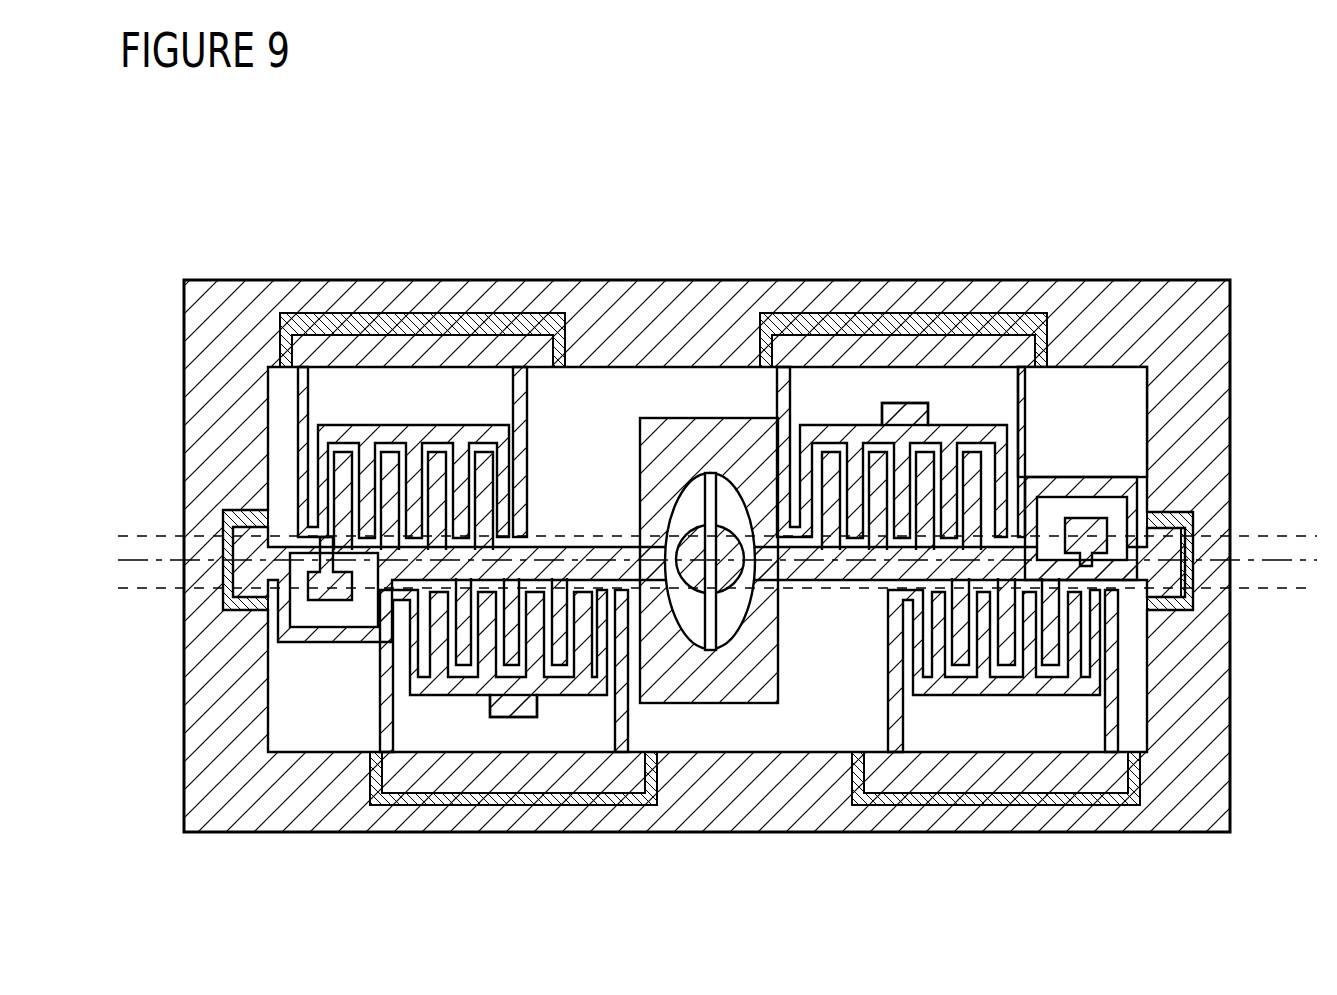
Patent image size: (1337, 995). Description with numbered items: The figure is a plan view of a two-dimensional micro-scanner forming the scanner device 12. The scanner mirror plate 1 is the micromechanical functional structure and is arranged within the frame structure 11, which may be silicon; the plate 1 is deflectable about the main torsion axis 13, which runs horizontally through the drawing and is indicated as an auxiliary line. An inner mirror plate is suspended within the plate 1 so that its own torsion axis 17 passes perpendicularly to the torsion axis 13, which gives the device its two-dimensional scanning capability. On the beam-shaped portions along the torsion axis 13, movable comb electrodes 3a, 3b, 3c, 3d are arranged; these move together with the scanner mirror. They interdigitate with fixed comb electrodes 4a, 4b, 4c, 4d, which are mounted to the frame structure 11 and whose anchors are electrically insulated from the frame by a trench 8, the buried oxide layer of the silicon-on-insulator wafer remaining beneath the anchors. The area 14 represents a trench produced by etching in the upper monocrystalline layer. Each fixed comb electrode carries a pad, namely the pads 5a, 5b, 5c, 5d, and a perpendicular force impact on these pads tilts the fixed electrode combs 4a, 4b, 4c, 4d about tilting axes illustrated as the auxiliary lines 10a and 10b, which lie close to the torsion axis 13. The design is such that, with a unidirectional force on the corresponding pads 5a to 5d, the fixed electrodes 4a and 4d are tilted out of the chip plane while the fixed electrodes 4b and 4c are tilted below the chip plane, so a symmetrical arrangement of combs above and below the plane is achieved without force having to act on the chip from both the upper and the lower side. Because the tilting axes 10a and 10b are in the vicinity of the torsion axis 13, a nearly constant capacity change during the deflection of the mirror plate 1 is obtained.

The scanner mirror plate 1 is at (662, 428).
The movable comb electrode 3a is at (344, 472).
The movable comb electrode 3b is at (970, 476).
The movable comb electrode 3c is at (517, 652).
The movable comb electrode 3d is at (941, 640).
The fixed comb electrode 4a is at (368, 480).
The fixed comb electrode 4b is at (860, 476).
The fixed comb electrode 4c is at (555, 642).
The fixed comb electrode 4d is at (1050, 640).
The pad 5a is at (330, 602).
The pad 5b is at (908, 404).
The pad 5c is at (496, 708).
The pad 5d is at (1086, 530).
The trench 8 is at (466, 322).
The tilting axis 10a is at (1296, 592).
The tilting axis 10b is at (1258, 533).
The frame structure 11 is at (1166, 312).
The scanner device 12 is at (934, 190).
The torsion axis 13 is at (1297, 560).
The trench area 14 is at (1058, 392).
The torsion axis of inner mirror plate 17 is at (713, 478).